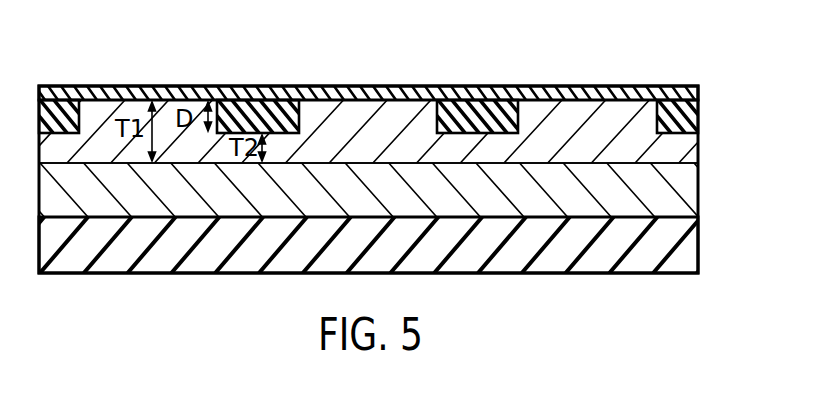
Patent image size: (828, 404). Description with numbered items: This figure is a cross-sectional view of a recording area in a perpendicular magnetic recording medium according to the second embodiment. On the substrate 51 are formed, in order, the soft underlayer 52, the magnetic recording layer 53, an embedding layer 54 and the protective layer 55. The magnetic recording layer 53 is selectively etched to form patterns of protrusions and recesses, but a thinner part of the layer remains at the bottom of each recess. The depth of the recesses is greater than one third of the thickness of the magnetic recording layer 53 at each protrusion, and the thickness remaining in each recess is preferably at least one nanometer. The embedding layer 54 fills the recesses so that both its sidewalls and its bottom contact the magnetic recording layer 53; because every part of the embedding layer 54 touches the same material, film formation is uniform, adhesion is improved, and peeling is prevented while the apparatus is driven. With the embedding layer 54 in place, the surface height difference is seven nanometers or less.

The substrate 51 is at (686, 252).
The soft underlayer 52 is at (686, 196).
The magnetic recording layer 53 is at (686, 151).
The embedding layer 54 is at (479, 118).
The protective layer 55 is at (377, 89).